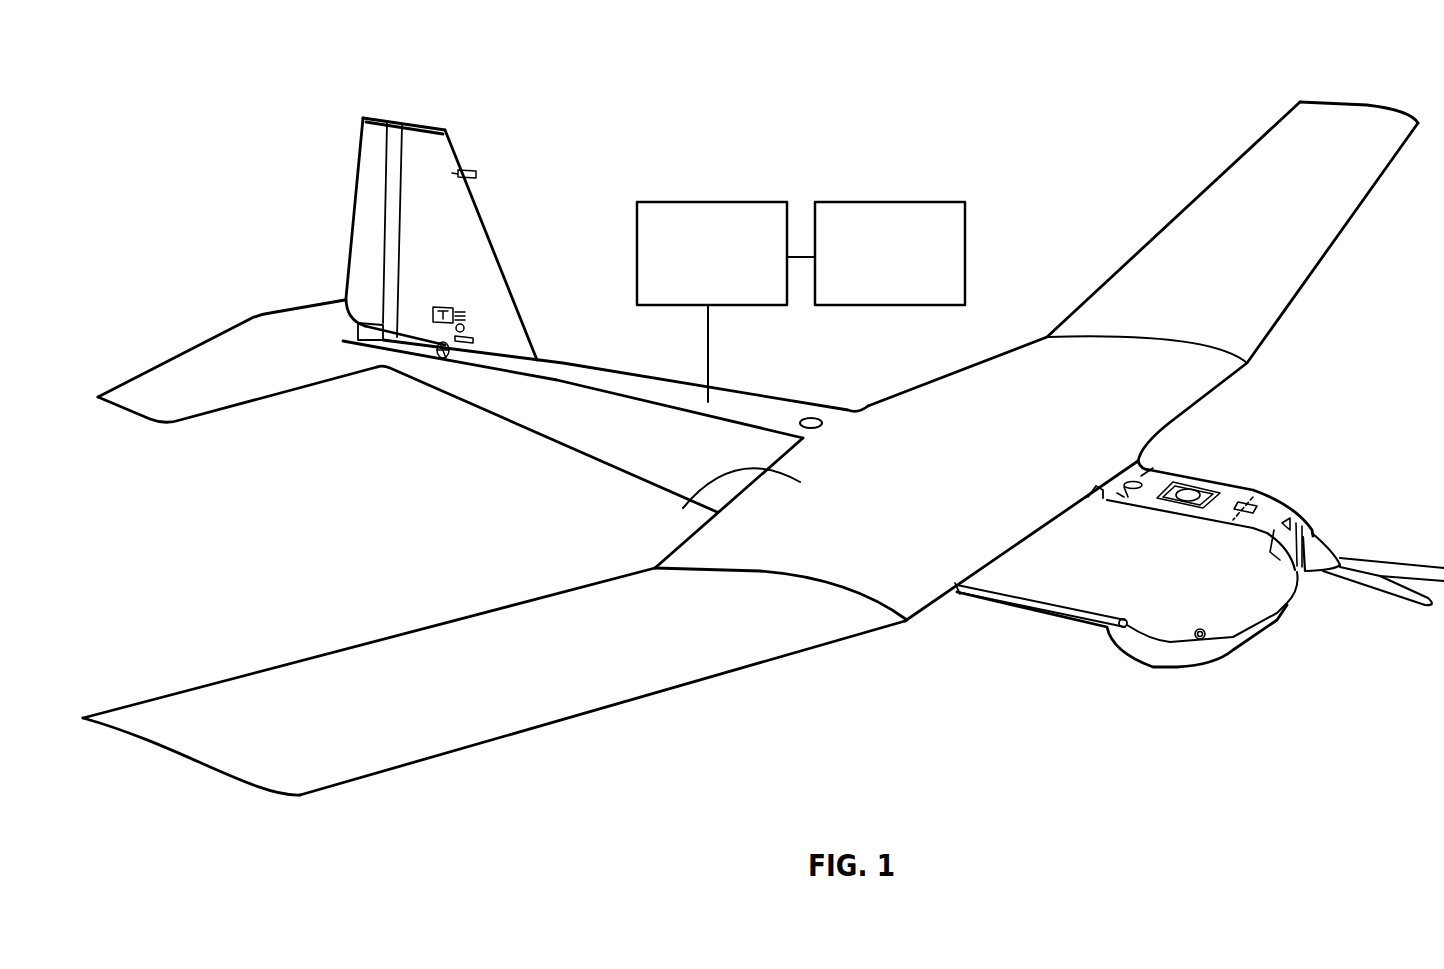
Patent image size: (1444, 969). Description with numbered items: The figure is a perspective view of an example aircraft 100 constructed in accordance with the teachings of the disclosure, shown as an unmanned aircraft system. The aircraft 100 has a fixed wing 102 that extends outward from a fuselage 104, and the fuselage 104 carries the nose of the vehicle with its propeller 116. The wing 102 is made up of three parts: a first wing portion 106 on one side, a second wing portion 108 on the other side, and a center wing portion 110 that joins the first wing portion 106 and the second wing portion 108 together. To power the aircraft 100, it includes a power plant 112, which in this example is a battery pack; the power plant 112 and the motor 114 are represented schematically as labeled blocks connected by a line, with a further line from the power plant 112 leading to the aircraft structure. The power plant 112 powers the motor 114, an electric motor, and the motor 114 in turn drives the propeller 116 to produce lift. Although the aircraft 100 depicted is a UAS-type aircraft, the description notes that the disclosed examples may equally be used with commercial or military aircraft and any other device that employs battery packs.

The aircraft 100 is at (686, 60).
The wing 102 is at (365, 662).
The fuselage 104 is at (1143, 588).
The first wing portion 106 is at (470, 735).
The second wing portion 108 is at (1320, 232).
The center wing portion 110 is at (697, 503).
The power plant 112 is at (707, 200).
The motor 114 is at (880, 200).
The propeller 116 is at (1403, 596).